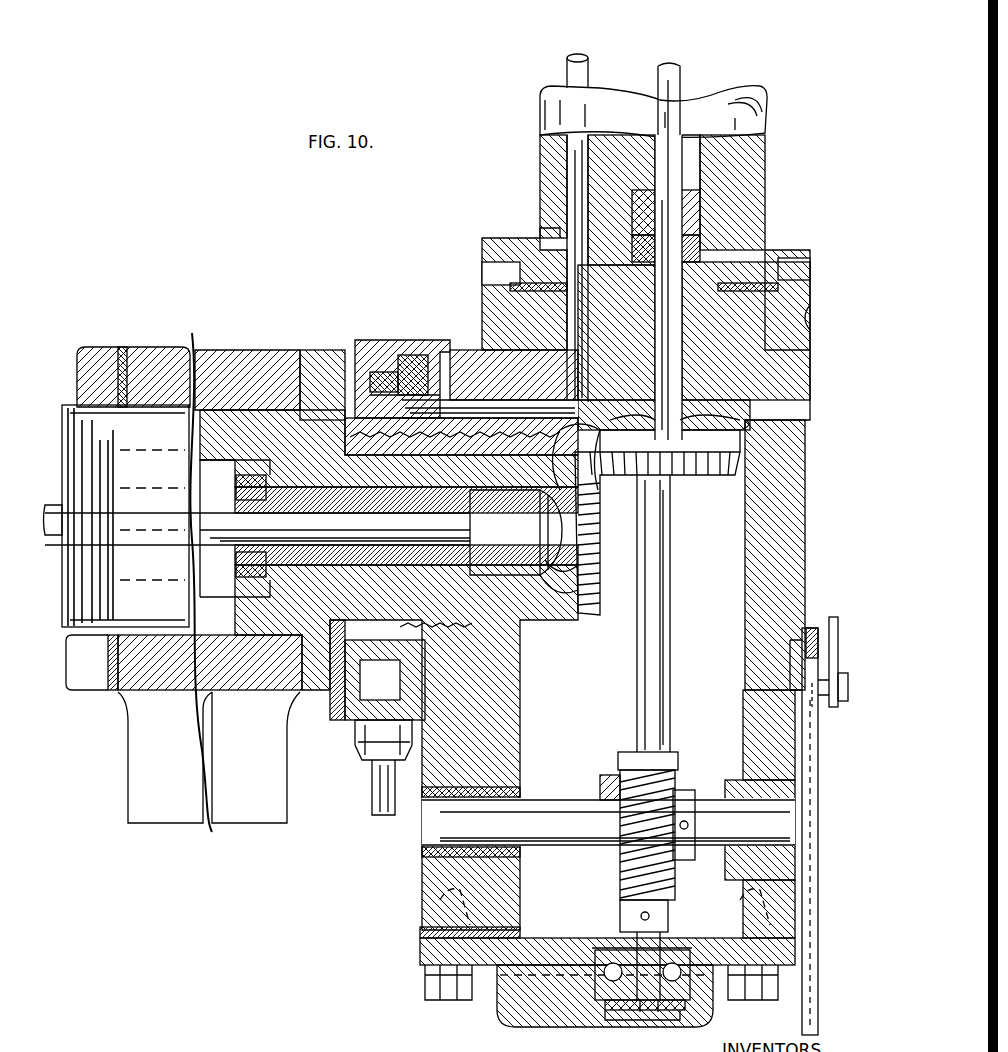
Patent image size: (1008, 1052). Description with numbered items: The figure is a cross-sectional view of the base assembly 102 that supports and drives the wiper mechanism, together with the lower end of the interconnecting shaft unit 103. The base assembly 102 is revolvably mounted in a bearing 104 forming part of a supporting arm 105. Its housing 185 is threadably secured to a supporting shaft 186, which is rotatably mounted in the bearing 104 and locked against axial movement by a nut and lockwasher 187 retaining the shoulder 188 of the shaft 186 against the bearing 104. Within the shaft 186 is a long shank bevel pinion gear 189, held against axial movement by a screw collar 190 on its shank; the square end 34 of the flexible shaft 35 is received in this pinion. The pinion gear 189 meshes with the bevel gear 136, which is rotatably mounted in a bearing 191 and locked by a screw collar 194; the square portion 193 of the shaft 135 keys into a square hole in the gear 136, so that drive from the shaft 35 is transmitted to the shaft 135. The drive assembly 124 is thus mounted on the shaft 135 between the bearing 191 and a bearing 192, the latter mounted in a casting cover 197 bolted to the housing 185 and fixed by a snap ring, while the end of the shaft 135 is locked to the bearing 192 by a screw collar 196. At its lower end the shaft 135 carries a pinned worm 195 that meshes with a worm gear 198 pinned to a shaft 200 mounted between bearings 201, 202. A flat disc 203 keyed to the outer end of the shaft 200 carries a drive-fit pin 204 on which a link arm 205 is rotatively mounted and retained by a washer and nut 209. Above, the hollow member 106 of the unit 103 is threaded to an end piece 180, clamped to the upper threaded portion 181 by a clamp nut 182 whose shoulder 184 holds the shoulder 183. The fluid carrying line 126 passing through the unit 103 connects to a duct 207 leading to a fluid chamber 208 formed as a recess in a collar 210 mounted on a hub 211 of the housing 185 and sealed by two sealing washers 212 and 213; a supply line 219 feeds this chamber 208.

The square end 34 is at (510, 500).
The flexible shaft 35 is at (55, 506).
The base assembly 102 is at (290, 245).
The interconnecting shaft unit 103 is at (752, 74).
The bearing 104 is at (192, 345).
The supporting arm 105 is at (135, 762).
The hollow member 106 is at (600, 110).
The drive assembly 124 is at (610, 895).
The fluid carrying line 126 is at (582, 58).
The shaft 135 is at (703, 42).
The bevel gear 136 is at (732, 480).
The end piece 180 is at (755, 200).
The upper threaded portion 181 is at (805, 318).
The clamp nut 182 is at (490, 268).
The shoulder 183 is at (790, 262).
The shoulder 184 is at (516, 240).
The housing 185 is at (795, 506).
The supporting shaft 186 is at (268, 400).
The nut and lockwasher 187 is at (110, 350).
The shoulder 188 is at (328, 360).
The long shank bevel pinion gear 189 is at (556, 598).
The screw collar 190 is at (248, 480).
The bearing 191 is at (735, 372).
The bearing 192 is at (618, 1006).
The square portion 193 is at (700, 247).
The screw collar 194 is at (705, 222).
The worm 195 is at (616, 762).
The screw collar 196 is at (656, 1006).
The casting cover 197 is at (490, 1012).
The worm gear 198 is at (620, 790).
The shaft 200 is at (592, 830).
The bearing 201 is at (428, 850).
The bearing 202 is at (740, 780).
The flat disc 203 is at (818, 904).
The pin 204 is at (822, 716).
The link arm 205 is at (836, 620).
The passage or duct 207 is at (460, 400).
The fluid chamber 208 is at (352, 745).
The washer and nut 209 is at (870, 658).
The collar 210 is at (352, 720).
The hub 211 is at (372, 340).
The sealing washer 212 is at (406, 350).
The sealing washer 213 is at (432, 345).
The supply line 219 is at (372, 786).